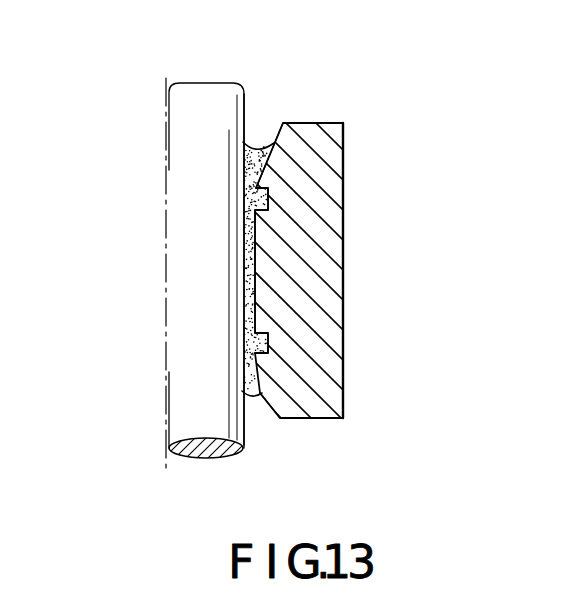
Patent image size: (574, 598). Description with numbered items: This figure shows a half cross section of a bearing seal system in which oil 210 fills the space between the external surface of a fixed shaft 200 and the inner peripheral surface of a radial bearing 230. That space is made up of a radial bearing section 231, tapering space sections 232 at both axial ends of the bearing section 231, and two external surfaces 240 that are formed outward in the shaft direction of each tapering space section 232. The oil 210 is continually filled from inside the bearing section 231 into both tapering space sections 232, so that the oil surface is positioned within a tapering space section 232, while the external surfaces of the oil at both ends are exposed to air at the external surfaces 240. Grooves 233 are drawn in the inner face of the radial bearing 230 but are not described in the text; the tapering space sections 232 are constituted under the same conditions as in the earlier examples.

The fixed shaft 200 is at (205, 128).
The oil 210 is at (247, 282).
The radial bearing 230 is at (312, 253).
The radial bearing section 231 is at (270, 303).
The tapering space section 232 is at (263, 172).
The groove 233 is at (270, 198).
The external surface 240 is at (261, 135).